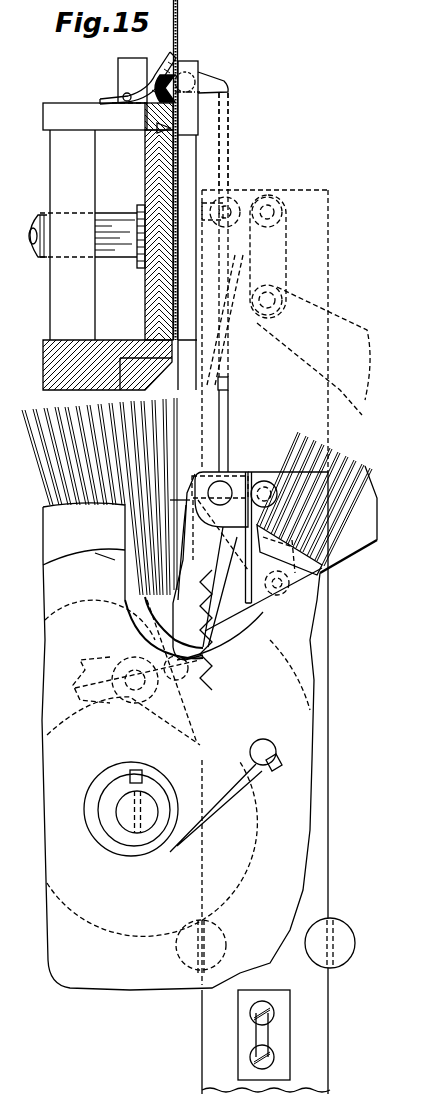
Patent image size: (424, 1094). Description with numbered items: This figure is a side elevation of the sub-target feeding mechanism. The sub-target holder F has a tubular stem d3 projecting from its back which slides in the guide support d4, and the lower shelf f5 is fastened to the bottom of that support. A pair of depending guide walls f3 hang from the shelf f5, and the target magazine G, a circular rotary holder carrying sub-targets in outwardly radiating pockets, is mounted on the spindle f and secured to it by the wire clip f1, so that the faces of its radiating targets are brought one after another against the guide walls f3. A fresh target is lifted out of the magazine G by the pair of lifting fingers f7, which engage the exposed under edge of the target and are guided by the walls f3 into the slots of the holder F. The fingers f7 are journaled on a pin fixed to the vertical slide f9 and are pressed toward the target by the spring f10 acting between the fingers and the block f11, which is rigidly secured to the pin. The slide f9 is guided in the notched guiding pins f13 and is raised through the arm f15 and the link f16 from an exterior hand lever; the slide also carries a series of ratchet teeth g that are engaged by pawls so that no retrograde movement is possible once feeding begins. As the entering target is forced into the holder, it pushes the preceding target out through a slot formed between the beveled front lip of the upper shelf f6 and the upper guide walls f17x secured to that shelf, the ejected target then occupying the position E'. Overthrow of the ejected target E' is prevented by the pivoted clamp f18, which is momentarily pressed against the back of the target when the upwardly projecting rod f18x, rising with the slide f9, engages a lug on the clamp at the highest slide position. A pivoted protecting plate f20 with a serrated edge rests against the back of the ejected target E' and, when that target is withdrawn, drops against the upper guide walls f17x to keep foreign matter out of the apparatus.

The ejected target E' is at (196, 170).
The pivoted protecting plate f20 is at (157, 63).
The upper shelf f6 is at (60, 104).
The upper guide walls f17x is at (192, 130).
The pivoted clamp f18 is at (208, 84).
The upwardly projecting rod f18x is at (229, 125).
The sub-target holder F is at (145, 180).
The guide support d4 is at (55, 185).
The tubular stem d3 is at (34, 250).
The shelf f5 is at (50, 372).
The depending guide walls f3 is at (190, 420).
The target holder or magazine G is at (181, 745).
The block f11 is at (270, 473).
The spring f10 is at (250, 608).
The arm f15 is at (345, 547).
The link f16 is at (322, 597).
The lifting fingers f7 is at (140, 612).
The spindle f is at (160, 790).
The wire clip f1 is at (220, 800).
The vertical slide f9 is at (325, 787).
The notched guiding pins f13 is at (340, 930).
The ratchet teeth g is at (287, 1025).